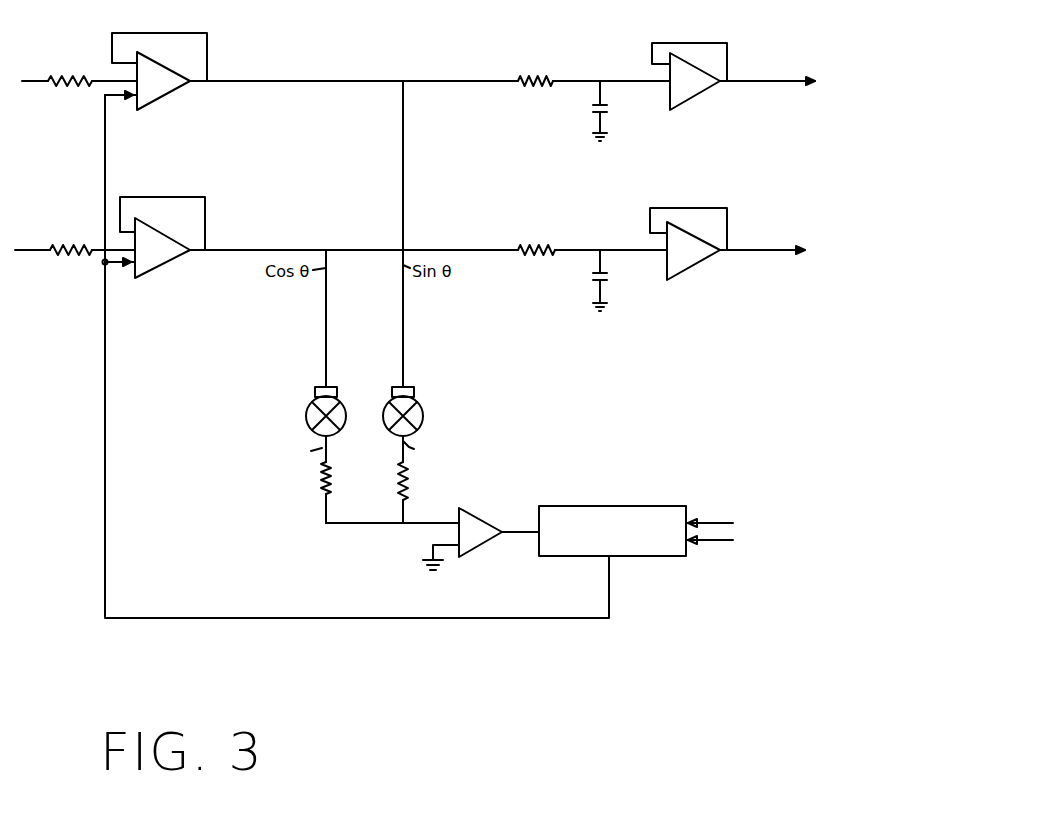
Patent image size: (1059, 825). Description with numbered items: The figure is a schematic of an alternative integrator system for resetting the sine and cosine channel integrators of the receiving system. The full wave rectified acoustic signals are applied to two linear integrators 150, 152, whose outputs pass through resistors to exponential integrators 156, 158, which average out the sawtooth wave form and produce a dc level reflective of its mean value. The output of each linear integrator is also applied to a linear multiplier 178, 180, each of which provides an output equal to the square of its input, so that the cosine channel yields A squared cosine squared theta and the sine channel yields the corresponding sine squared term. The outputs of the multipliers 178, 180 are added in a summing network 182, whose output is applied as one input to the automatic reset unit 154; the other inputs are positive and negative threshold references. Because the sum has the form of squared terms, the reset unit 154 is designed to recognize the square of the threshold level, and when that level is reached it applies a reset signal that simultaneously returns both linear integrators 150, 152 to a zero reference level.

The linear integrator 150 is at (246, 30).
The linear integrator 152 is at (221, 237).
The automatic reset unit 154 is at (588, 505).
The exponential integrator 156 is at (578, 38).
The exponential integrator 158 is at (585, 212).
The linear multiplier 178 is at (311, 404).
The linear multiplier 180 is at (412, 410).
The summing network 182 is at (472, 516).